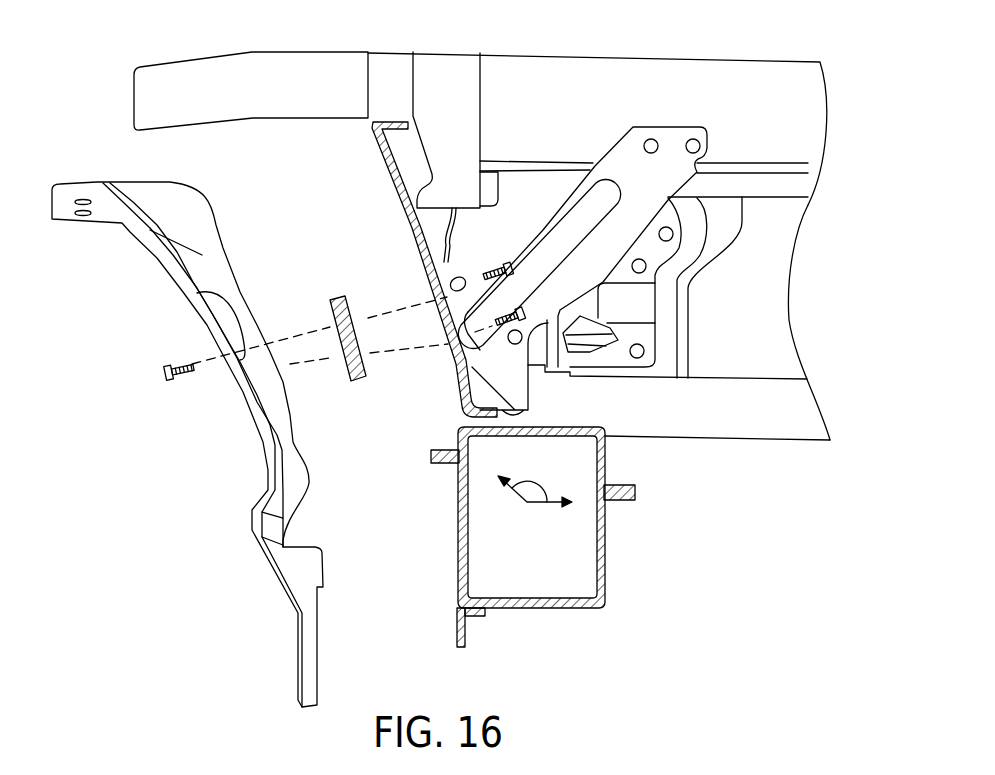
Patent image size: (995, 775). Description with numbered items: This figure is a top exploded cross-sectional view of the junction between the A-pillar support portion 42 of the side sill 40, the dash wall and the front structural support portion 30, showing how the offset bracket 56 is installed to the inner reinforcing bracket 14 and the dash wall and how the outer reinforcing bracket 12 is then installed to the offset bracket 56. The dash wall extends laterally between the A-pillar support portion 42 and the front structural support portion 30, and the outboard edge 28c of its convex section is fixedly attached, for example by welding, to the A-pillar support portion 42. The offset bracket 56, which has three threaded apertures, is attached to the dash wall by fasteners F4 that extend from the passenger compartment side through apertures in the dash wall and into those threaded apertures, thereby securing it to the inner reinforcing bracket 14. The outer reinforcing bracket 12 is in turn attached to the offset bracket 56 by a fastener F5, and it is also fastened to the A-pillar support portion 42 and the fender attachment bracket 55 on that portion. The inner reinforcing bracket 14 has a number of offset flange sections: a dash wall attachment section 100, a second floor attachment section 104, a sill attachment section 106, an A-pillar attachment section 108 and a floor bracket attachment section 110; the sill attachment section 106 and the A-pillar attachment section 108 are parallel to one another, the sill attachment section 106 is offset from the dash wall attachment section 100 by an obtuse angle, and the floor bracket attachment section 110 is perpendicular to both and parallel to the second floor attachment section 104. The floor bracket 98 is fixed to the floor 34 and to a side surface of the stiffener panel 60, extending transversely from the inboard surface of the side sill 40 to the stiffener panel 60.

The outer reinforcing bracket 12 is at (257, 396).
The inner reinforcing bracket 14 is at (535, 188).
The outboard edge 28c is at (463, 397).
The front structural support portion 30 is at (190, 90).
The floor 34 is at (760, 298).
The side sill 40 is at (790, 408).
The A-pillar support portion 42 is at (592, 424).
The fender attachment bracket 55 is at (467, 633).
The offset bracket 56 is at (347, 356).
The stiffener panel 60 is at (767, 100).
The floor bracket 98 is at (665, 336).
The dash wall attachment section 100 is at (447, 289).
The second floor attachment section 104 is at (664, 143).
The sill attachment section 106 is at (552, 377).
The A-pillar attachment section 108 is at (520, 417).
The floor bracket attachment section 110 is at (640, 278).
The fastener F4 is at (530, 298).
The fastener F5 is at (172, 365).